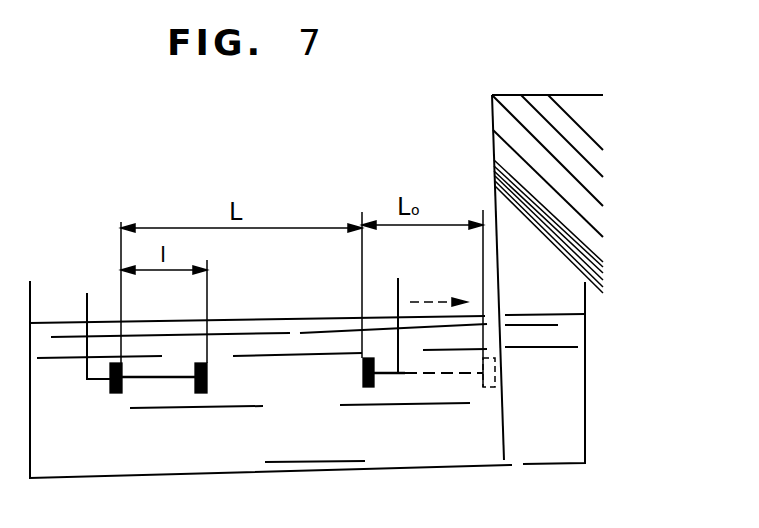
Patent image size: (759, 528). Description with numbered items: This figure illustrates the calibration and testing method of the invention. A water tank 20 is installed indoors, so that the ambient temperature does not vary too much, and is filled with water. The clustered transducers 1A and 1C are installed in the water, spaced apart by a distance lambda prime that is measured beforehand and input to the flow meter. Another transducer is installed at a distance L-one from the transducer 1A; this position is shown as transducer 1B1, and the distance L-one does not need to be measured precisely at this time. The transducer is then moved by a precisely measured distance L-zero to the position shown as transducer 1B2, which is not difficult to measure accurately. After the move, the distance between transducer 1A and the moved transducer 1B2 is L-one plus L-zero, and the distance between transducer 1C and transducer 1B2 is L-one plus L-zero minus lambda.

The clustered transducer 1A is at (117, 394).
The clustered transducer 1C is at (201, 394).
The transducer at initial position 1B1 is at (367, 388).
The transducer at displaced position 1B2 is at (487, 388).
The water tank 20 is at (585, 388).